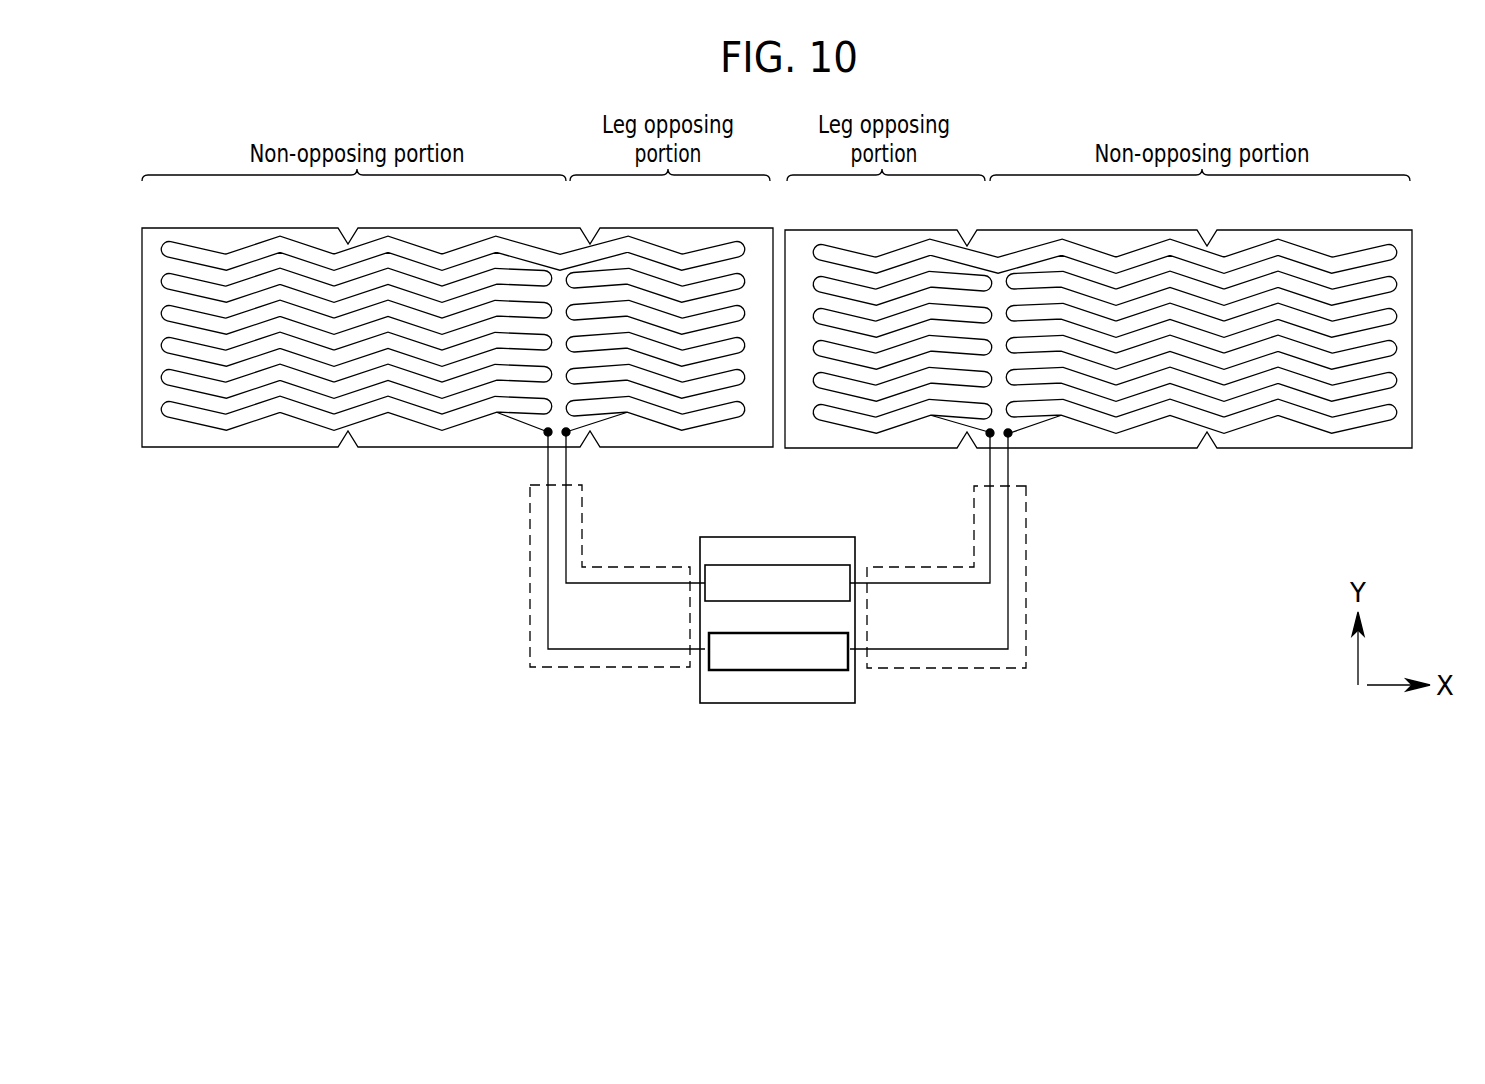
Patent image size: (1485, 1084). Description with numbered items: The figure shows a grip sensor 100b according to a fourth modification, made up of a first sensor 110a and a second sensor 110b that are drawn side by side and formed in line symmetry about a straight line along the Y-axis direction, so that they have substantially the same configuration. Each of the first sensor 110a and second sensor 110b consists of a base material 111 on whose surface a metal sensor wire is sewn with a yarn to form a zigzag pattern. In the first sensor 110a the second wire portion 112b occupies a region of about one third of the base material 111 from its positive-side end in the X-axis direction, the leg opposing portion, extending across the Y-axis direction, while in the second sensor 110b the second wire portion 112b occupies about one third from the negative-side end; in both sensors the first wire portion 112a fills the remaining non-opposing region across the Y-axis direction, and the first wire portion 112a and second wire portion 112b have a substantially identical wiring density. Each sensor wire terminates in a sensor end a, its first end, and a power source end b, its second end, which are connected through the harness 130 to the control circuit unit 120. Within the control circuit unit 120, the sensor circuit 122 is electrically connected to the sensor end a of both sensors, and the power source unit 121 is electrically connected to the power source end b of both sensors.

The base material 111 is at (172, 227).
The first sensor 110a is at (524, 230).
The second sensor 110b is at (1055, 212).
The first wire portion 112a is at (311, 247).
The second wire portion 112b is at (708, 247).
The sensor end a is at (546, 434).
The power source end b is at (568, 434).
The control circuit unit 120 is at (757, 537).
The power source unit 121 is at (757, 565).
The sensor circuit 122 is at (757, 633).
The harness 130 is at (598, 667).
The grip sensor 100b is at (1050, 763).